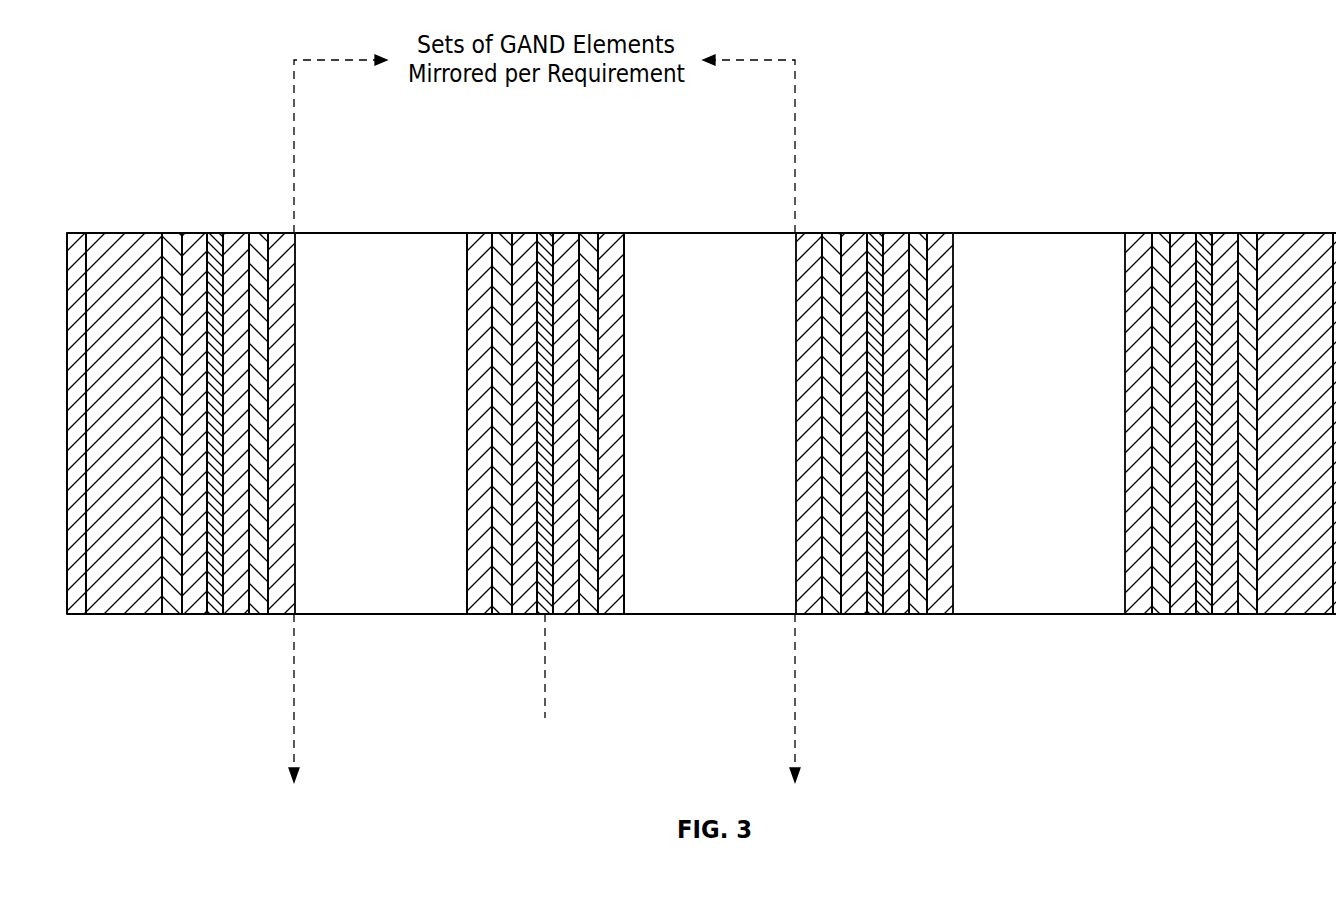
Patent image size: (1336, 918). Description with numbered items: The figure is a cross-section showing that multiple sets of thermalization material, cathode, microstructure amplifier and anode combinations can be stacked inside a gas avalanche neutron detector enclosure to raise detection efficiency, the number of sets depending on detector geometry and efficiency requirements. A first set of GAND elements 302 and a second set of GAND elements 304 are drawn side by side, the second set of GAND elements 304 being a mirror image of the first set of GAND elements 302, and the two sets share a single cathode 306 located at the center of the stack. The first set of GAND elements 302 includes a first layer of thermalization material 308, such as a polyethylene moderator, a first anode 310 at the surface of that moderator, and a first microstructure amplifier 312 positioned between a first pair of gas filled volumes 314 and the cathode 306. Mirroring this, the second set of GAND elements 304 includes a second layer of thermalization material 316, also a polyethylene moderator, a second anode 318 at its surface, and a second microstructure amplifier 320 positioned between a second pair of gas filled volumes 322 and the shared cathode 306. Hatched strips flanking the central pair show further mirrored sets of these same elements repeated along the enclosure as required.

The first set of GAND elements 302 is at (545, 718).
The second set of GAND elements 304 is at (795, 718).
The cathode 306 is at (546, 233).
The first layer of thermalization material 308 is at (402, 485).
The first anode 310 is at (467, 262).
The first microstructure amplifier 312 is at (498, 614).
The first pair of gas filled volumes 314 is at (523, 233).
The second layer of thermalization material 316 is at (732, 485).
The second anode 318 is at (627, 263).
The second microstructure amplifier 320 is at (590, 614).
The second pair of gas filled volumes 322 is at (613, 233).